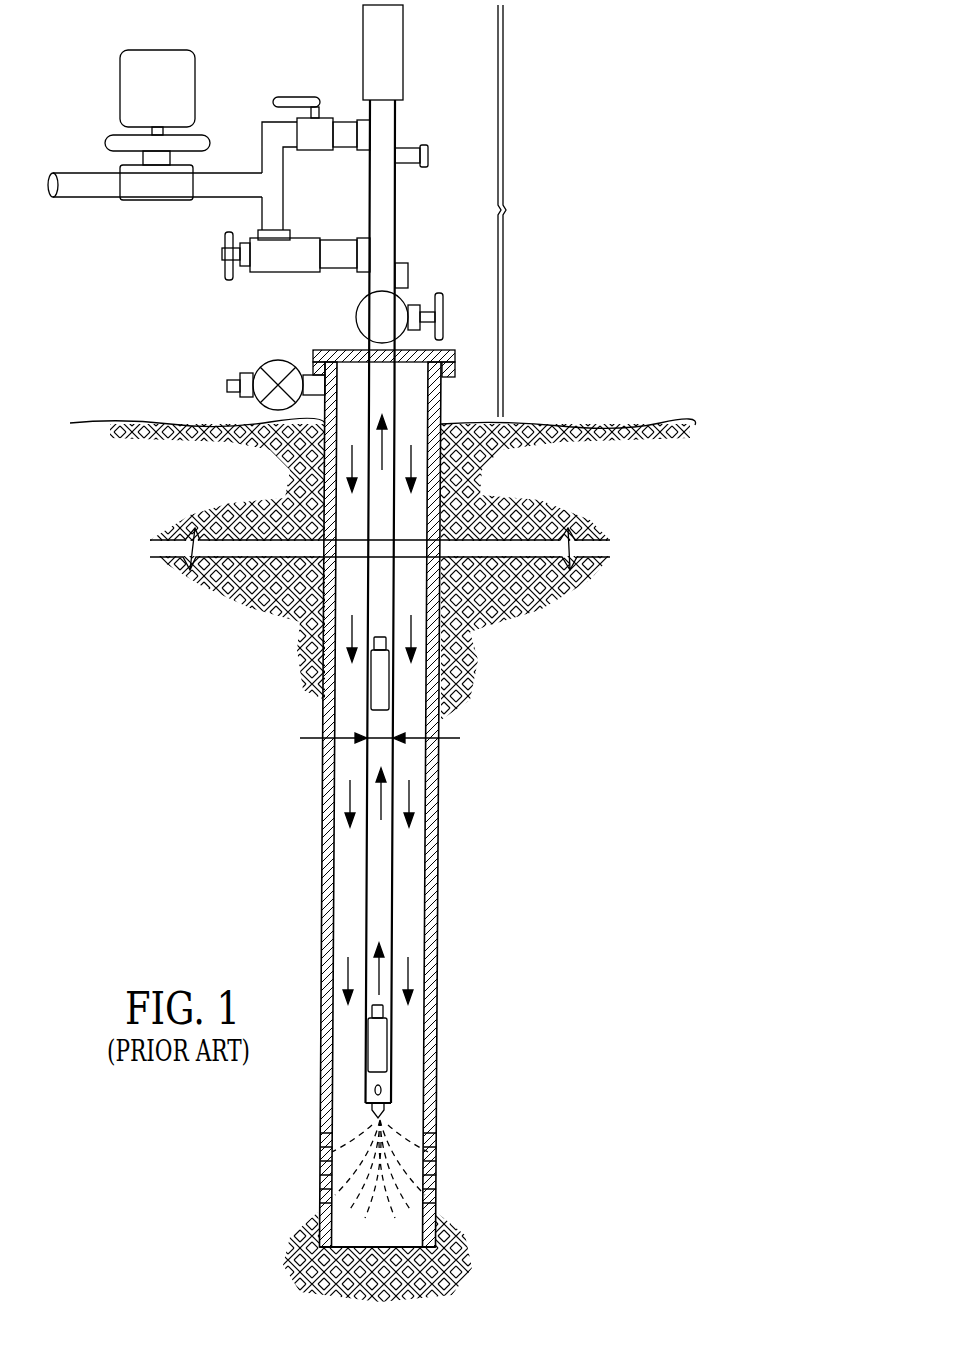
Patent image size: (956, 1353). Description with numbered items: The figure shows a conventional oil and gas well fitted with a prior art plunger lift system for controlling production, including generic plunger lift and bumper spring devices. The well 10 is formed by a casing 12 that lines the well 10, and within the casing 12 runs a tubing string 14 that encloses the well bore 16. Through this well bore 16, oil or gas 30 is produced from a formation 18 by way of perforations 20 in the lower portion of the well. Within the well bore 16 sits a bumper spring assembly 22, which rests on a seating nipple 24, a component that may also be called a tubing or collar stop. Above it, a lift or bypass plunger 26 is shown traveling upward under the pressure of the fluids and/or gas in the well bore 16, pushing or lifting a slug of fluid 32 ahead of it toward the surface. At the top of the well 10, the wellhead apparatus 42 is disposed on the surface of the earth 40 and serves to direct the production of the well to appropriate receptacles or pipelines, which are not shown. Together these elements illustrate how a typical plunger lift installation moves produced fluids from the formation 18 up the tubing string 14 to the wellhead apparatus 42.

The well 10 is at (586, 722).
The casing 12 is at (437, 948).
The tubing string 14 is at (393, 862).
The well bore 16 is at (451, 740).
The formation 18 is at (450, 1262).
The perforations 20 is at (320, 1176).
The bumper spring assembly 22 is at (378, 1047).
The seating nipple 24 is at (392, 1096).
The bypass plunger 26 is at (380, 686).
The oil or gas 30 is at (378, 897).
The slug of fluid 32 is at (380, 590).
The surface of the earth 40 is at (580, 422).
The wellhead apparatus 42 is at (521, 211).